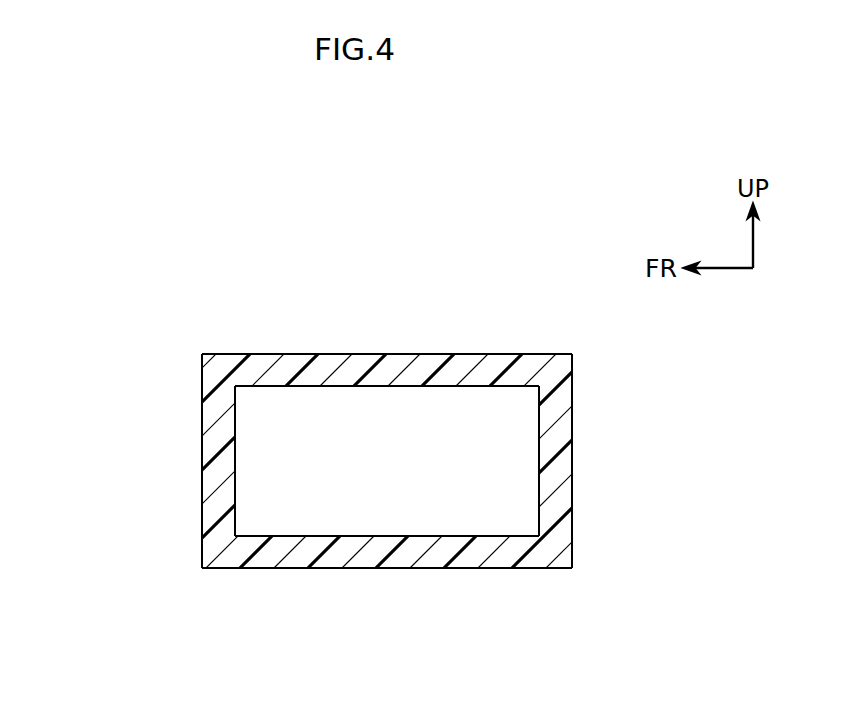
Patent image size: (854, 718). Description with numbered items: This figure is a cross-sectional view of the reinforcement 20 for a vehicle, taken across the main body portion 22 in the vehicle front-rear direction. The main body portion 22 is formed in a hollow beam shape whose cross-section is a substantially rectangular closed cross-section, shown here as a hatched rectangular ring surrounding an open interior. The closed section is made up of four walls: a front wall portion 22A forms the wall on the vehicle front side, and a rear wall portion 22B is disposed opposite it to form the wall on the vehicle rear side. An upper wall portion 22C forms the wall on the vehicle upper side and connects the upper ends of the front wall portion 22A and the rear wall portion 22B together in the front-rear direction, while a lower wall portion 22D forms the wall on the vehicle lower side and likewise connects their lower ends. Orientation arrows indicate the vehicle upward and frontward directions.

The frame member 20 is at (125, 441).
The main body portion 22 is at (200, 490).
The front wall portion 22A is at (202, 410).
The rear wall portion 22B is at (573, 465).
The upper wall portion 22C is at (406, 353).
The lower wall portion 22D is at (385, 568).